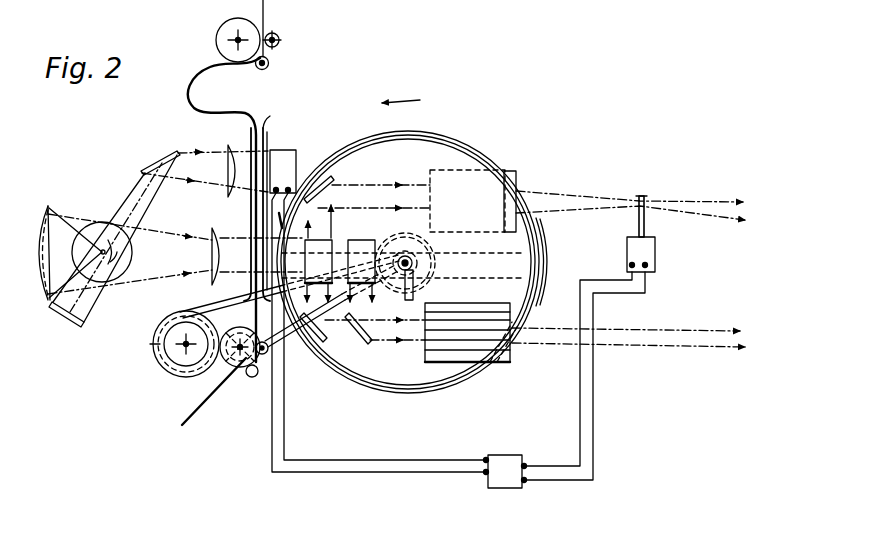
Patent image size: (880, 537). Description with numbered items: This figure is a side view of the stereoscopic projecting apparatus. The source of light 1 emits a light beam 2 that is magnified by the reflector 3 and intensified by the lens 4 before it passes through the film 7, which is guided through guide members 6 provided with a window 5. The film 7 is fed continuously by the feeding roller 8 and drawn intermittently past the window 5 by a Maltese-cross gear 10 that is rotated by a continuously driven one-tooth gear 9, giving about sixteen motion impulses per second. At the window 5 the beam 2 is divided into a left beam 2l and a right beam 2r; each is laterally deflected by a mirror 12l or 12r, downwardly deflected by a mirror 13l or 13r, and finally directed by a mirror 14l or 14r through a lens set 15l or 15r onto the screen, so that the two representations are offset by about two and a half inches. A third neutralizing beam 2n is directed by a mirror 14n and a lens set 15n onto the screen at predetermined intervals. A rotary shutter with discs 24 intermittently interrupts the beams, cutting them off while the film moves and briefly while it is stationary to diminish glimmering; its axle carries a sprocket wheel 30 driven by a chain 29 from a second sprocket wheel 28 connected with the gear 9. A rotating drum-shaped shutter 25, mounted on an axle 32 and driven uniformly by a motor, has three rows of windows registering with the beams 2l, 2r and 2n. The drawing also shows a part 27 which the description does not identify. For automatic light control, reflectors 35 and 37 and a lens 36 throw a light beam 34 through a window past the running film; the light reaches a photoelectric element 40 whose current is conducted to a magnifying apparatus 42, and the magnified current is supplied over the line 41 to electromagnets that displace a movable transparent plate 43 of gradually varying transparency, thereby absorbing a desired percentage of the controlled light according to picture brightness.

The source of light 1 is at (119, 250).
The light beam 2 is at (178, 261).
The neutralizing beam 2n is at (722, 222).
The left beam 2l is at (725, 348).
The right beam 2r is at (727, 349).
The reflector 3 is at (41, 263).
The lens 4 is at (213, 246).
The window 5 is at (251, 240).
The guide members 6 is at (268, 127).
The film 7 is at (247, 112).
The feeding roller 8 is at (218, 31).
The one-tooth gear 9 is at (172, 375).
The Maltese-cross gear 10 is at (237, 366).
The mirror 12r is at (333, 240).
The mirror 12l is at (368, 240).
The mirror 13r is at (326, 242).
The mirror 13l is at (365, 236).
The mirror 14n is at (326, 190).
The mirror 14r is at (313, 344).
The mirror 14l is at (352, 343).
The lens set 15n is at (515, 175).
The lens set 15l is at (509, 358).
The lens set 15r is at (504, 364).
The discs 24 is at (541, 246).
The drum-shaped shutter 25 is at (434, 136).
The drum 27 is at (194, 333).
The second sprocket wheel 28 is at (154, 361).
The chain 29 is at (206, 308).
The sprocket wheel 30 is at (415, 271).
The axle 32 is at (417, 283).
The light beam 34 is at (149, 187).
The reflector 35 is at (70, 325).
The lens 36 is at (230, 150).
The reflector 37 is at (167, 158).
The photoelectric element 40 is at (283, 171).
The line 41 is at (392, 473).
The magnifying apparatus 42 is at (505, 471).
The movable transparent plate 43 is at (646, 198).